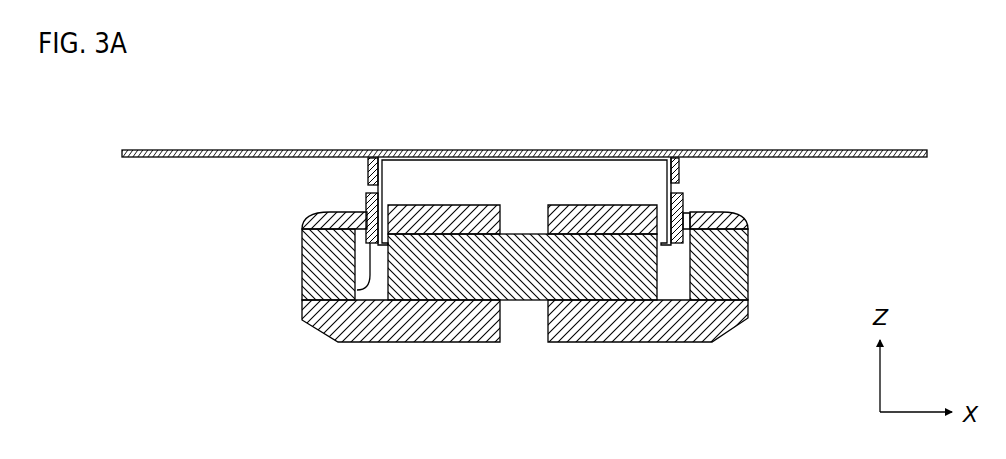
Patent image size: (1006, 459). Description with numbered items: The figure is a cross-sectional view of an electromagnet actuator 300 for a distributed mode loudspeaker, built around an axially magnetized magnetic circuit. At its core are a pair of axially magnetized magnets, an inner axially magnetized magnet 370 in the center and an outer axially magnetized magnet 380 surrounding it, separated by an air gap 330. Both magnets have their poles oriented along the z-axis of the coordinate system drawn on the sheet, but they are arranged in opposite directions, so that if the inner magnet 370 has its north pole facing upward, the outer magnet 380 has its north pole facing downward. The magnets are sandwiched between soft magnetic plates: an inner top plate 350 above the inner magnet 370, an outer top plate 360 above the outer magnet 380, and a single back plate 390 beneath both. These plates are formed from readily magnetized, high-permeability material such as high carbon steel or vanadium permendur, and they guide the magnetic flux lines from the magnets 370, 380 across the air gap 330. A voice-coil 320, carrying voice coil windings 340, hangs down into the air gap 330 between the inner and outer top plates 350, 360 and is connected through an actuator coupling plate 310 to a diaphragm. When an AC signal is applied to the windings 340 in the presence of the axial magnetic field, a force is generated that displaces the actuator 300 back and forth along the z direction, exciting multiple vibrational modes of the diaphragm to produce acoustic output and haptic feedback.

The electromagnet actuator 300 is at (125, 252).
The actuator coupling plate 310 is at (270, 148).
The voice-coil 320 is at (366, 185).
The air gap 330 is at (355, 233).
The voice coil windings 340 is at (302, 306).
The inner top plate 350 is at (583, 218).
The outer top plate 360 is at (712, 222).
The inner axially magnetized magnet 370 is at (633, 273).
The outer axially magnetized magnet 380 is at (745, 278).
The back plate 390 is at (697, 337).